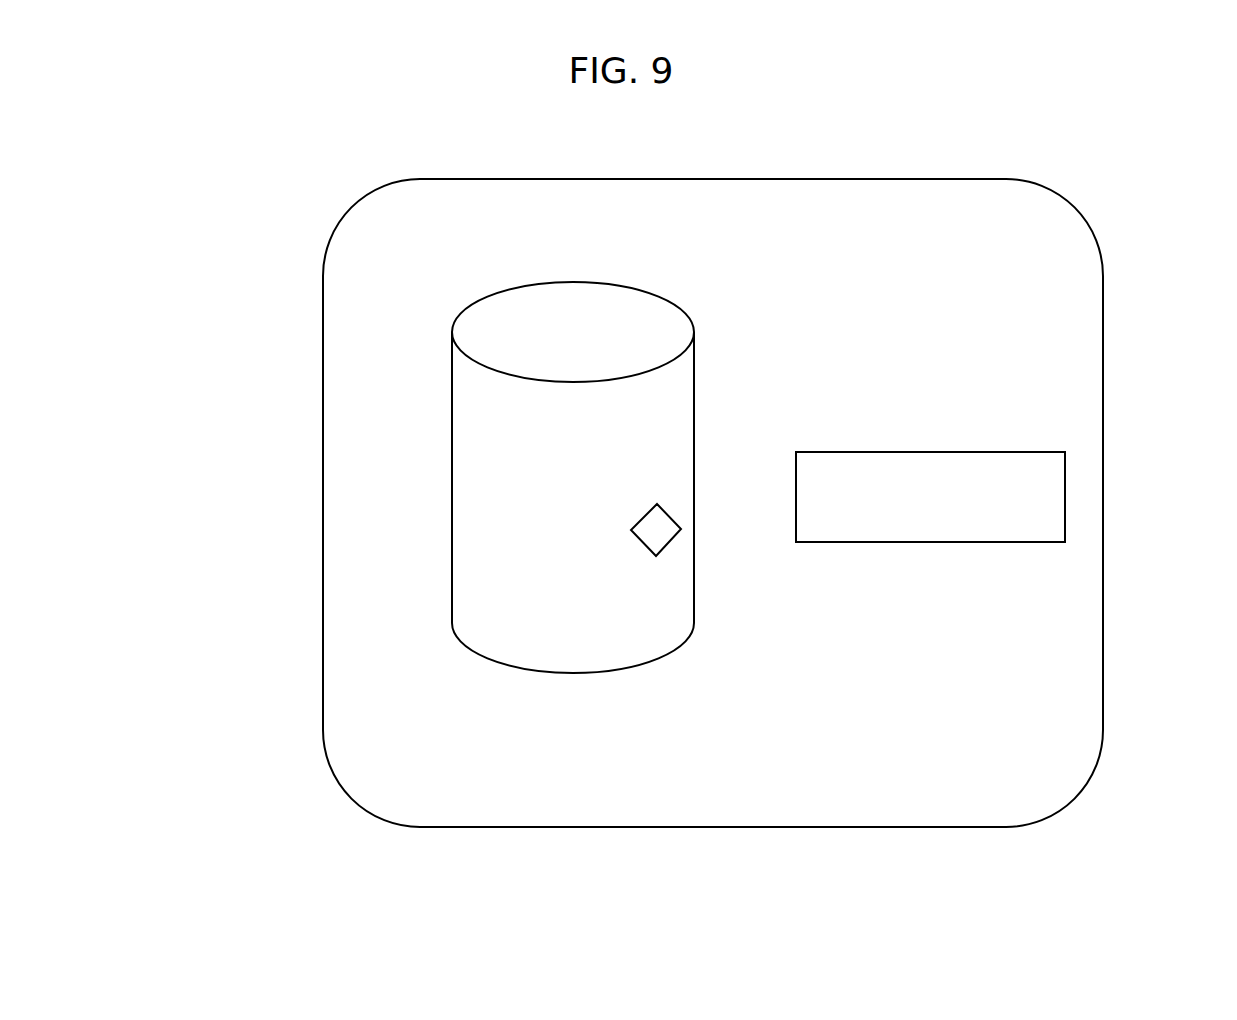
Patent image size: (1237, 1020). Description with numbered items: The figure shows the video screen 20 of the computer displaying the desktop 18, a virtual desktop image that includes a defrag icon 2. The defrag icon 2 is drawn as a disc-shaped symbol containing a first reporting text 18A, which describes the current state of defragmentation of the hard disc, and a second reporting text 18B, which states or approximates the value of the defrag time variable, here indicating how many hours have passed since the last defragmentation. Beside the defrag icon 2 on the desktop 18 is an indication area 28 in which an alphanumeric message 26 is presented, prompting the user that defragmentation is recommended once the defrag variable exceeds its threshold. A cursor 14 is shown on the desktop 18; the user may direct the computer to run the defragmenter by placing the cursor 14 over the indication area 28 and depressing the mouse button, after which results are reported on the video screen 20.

The defrag icon 2 is at (447, 475).
The cursor 14 is at (671, 516).
The desktop 18 is at (426, 272).
The first reporting text 18A is at (667, 401).
The second reporting text 18B is at (460, 565).
The video screen 20 is at (318, 497).
The alphanumeric message 26 is at (1038, 502).
The indication area 28 is at (898, 448).